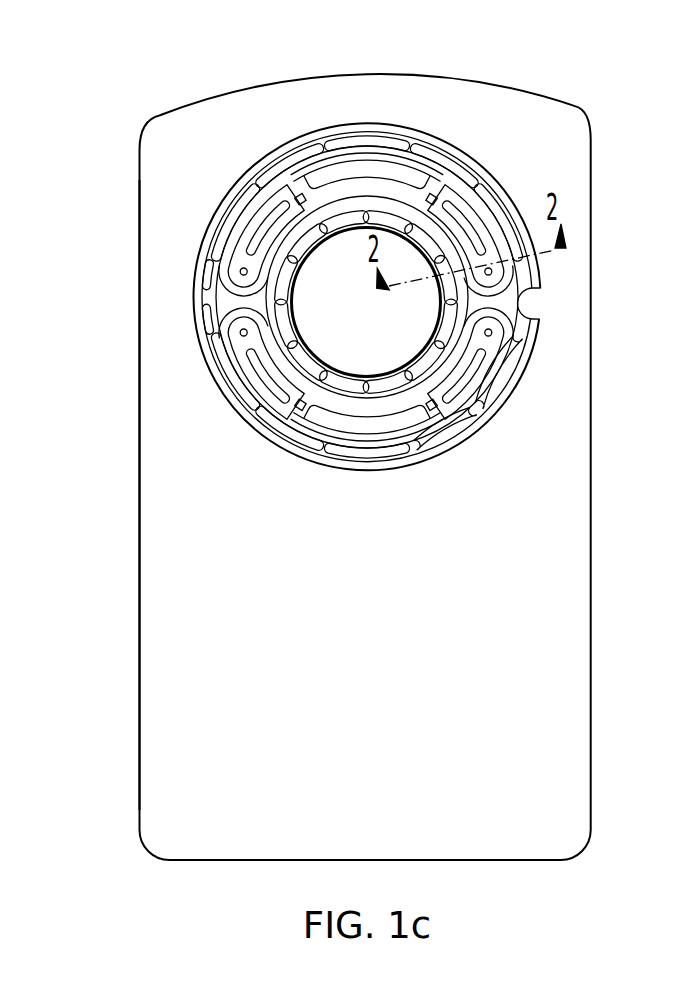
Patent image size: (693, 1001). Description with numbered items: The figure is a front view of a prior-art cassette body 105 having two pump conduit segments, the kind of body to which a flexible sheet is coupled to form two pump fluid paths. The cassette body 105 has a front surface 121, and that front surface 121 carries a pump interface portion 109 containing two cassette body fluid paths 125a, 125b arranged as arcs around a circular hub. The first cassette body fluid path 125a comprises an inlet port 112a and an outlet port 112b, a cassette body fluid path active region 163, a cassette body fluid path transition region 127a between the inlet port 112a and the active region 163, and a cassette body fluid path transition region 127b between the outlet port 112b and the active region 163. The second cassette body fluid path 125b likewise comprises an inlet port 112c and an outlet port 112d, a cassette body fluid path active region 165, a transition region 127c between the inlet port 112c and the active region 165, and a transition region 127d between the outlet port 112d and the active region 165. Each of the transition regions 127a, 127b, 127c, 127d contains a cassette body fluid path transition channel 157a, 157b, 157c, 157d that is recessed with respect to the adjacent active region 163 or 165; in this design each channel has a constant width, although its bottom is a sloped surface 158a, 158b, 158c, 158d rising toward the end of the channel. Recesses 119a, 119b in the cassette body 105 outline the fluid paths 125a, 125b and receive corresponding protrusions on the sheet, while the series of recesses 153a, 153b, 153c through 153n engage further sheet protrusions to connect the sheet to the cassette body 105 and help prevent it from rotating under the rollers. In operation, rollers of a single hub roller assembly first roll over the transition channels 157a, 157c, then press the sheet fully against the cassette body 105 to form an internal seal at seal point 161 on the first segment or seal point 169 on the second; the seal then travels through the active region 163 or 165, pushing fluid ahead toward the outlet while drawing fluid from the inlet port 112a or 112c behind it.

The cassette body 105 is at (200, 95).
The pump interface portion 109 is at (171, 258).
The front surface 121 is at (150, 490).
The seal point 161 is at (432, 130).
The seal point 169 is at (293, 448).
The recess 119a is at (490, 220).
The recess 119b is at (543, 325).
The recess 153a is at (364, 137).
The recess 153b is at (368, 465).
The recess 153c is at (313, 240).
The recess 153n is at (313, 363).
The cassette body fluid path 125a is at (397, 185).
The cassette body fluid path 125b is at (401, 420).
The cassette body fluid path transition region 127a is at (462, 196).
The cassette body fluid path transition region 127b is at (245, 237).
The cassette body fluid path transition region 127c is at (262, 393).
The cassette body fluid path transition region 127d is at (458, 400).
The cassette body fluid path transition channel 157a is at (528, 262).
The cassette body fluid path transition channel 157b is at (268, 222).
The cassette body fluid path transition channel 157c is at (257, 362).
The cassette body fluid path transition channel 157d is at (500, 362).
The inlet port 112a is at (540, 297).
The outlet port 112b is at (240, 273).
The inlet port 112c is at (240, 333).
The outlet port 112d is at (520, 350).
The sloped surface 158a is at (434, 194).
The sloped surface 158b is at (301, 192).
The sloped surface 158c is at (305, 412).
The sloped surface 158d is at (433, 410).
The cassette body fluid path active region 163 is at (362, 175).
The cassette body fluid path active region 165 is at (342, 440).